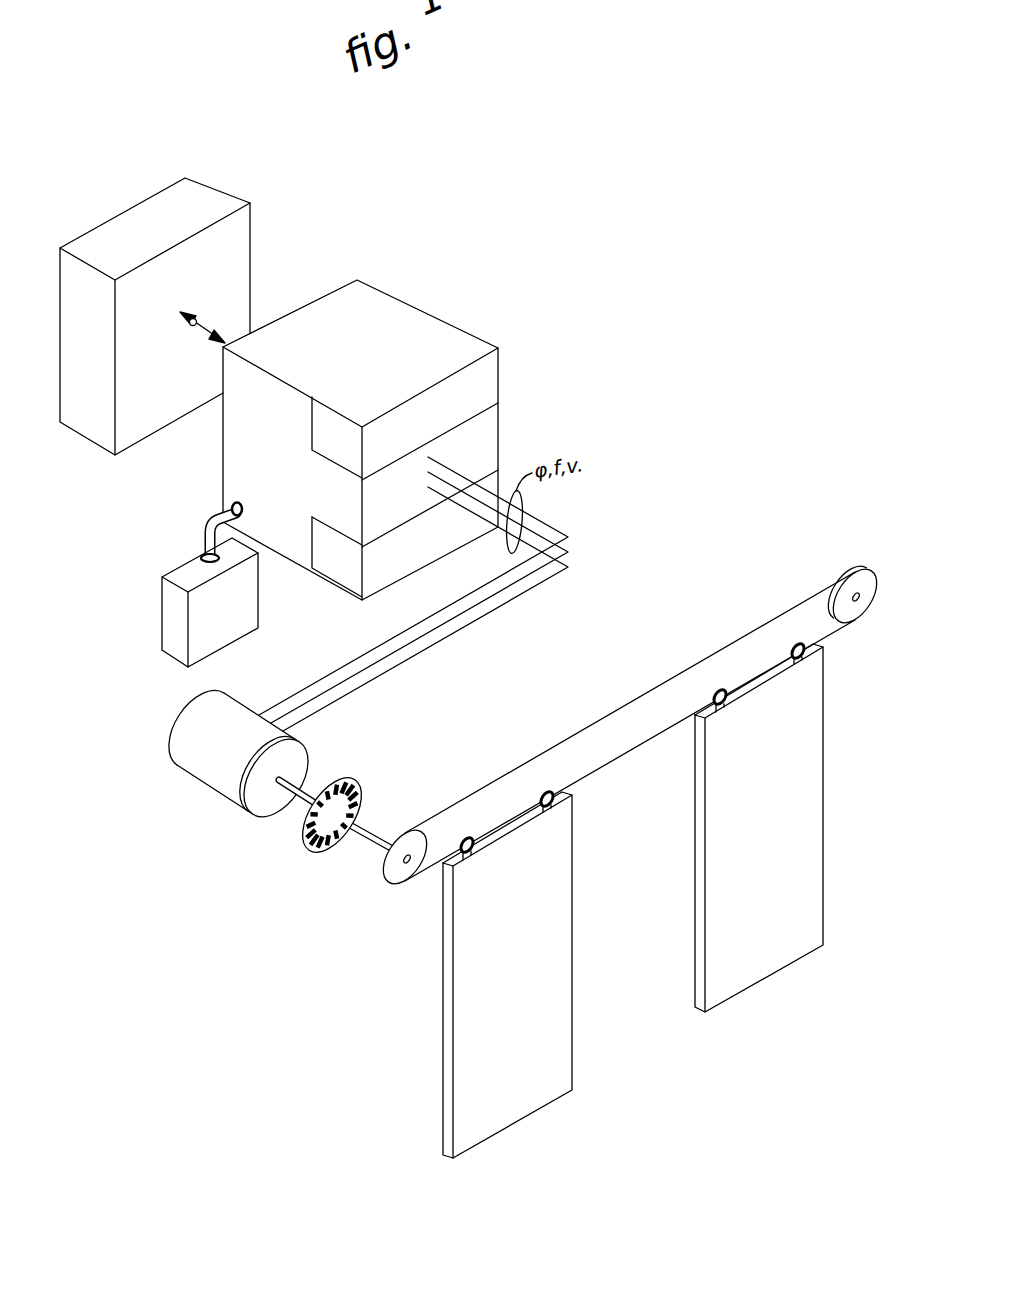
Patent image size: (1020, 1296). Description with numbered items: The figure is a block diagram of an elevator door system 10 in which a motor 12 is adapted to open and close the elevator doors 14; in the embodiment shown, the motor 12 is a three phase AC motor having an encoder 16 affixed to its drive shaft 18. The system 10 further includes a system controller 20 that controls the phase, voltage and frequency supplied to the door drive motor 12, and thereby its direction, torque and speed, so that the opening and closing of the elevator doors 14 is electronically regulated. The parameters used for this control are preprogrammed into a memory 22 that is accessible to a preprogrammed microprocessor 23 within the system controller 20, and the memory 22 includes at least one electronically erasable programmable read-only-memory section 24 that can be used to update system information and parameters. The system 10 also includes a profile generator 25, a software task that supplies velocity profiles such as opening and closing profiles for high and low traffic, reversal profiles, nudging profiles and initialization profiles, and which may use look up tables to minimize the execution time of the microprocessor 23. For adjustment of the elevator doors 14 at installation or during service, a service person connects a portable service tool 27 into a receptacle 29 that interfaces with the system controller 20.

The elevator door system 10 is at (695, 442).
The motor 12 is at (235, 722).
The elevator doors 14 is at (532, 995).
The encoder 16 is at (357, 803).
The drive shaft 18 is at (293, 793).
The system controller 20 is at (394, 421).
The memory 22 is at (450, 537).
The microprocessor 23 is at (412, 503).
The electronically erasable programmable read-only-memory section 24 is at (440, 423).
The profile generator 25 is at (198, 283).
The portable service tool 27 is at (238, 617).
The receptacle 29 is at (234, 504).